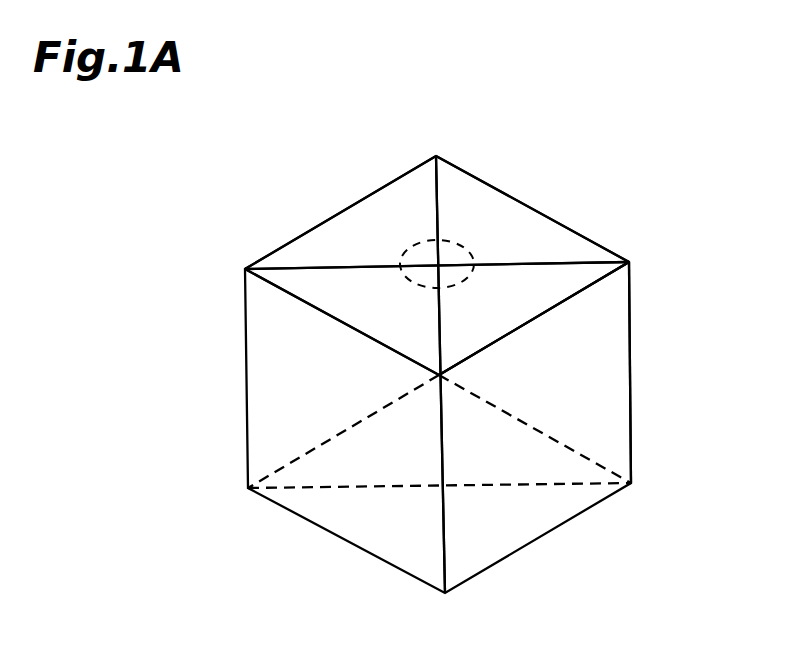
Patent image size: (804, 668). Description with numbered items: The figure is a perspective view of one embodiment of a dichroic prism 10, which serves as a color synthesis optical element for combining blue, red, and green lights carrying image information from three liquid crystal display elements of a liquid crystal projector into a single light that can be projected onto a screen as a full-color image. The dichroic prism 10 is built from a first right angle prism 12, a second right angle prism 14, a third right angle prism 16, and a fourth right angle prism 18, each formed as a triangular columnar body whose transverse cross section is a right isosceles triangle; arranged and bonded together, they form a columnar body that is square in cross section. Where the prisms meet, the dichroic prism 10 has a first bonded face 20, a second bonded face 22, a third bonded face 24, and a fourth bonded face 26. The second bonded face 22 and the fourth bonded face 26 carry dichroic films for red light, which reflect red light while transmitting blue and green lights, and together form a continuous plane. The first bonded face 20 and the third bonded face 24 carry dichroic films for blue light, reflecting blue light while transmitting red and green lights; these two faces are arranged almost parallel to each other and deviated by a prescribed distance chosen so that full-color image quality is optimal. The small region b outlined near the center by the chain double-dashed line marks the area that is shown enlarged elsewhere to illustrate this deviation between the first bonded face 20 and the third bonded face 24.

The dichroic prism 10 is at (514, 91).
The first right angle prism 12 is at (415, 191).
The second right angle prism 14 is at (595, 251).
The third right angle prism 16 is at (593, 273).
The fourth right angle prism 18 is at (282, 280).
The first bonded face 20 is at (438, 186).
The second bonded face 22 is at (552, 262).
The third bonded face 24 is at (440, 322).
The fourth bonded face 26 is at (287, 268).
The region b is at (460, 250).